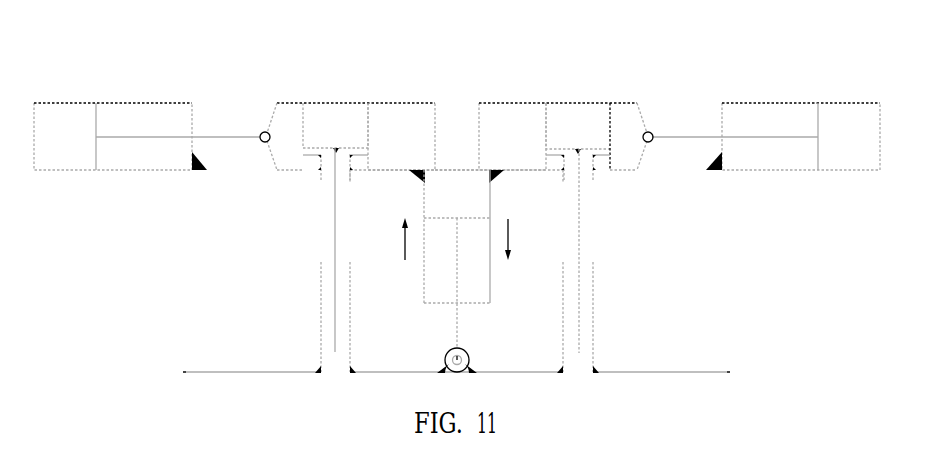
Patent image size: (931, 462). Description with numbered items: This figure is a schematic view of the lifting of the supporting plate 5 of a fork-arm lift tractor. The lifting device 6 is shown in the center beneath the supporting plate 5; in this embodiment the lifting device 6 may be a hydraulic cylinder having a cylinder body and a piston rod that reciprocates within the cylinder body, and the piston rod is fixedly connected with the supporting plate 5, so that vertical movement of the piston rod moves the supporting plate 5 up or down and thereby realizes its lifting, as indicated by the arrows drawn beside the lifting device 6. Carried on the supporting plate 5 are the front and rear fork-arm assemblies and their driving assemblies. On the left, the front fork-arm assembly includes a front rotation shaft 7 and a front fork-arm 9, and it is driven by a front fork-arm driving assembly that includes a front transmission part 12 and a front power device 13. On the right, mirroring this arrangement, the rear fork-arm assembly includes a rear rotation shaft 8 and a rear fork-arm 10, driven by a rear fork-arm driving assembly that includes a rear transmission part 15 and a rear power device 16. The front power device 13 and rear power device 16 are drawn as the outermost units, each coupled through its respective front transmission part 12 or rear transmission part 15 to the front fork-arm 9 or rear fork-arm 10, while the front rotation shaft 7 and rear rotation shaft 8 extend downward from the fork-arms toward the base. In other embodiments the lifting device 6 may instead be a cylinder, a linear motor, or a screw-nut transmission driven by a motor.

The supporting plate 5 is at (668, 170).
The lifting device 6 is at (424, 292).
The front rotation shaft 7 is at (321, 280).
The rear rotation shaft 8 is at (593, 286).
The front fork-arm 9 is at (330, 118).
The rear fork-arm 10 is at (580, 115).
The front transmission part 12 is at (393, 112).
The front power device 13 is at (74, 113).
The rear transmission part 15 is at (508, 113).
The rear power device 16 is at (836, 113).